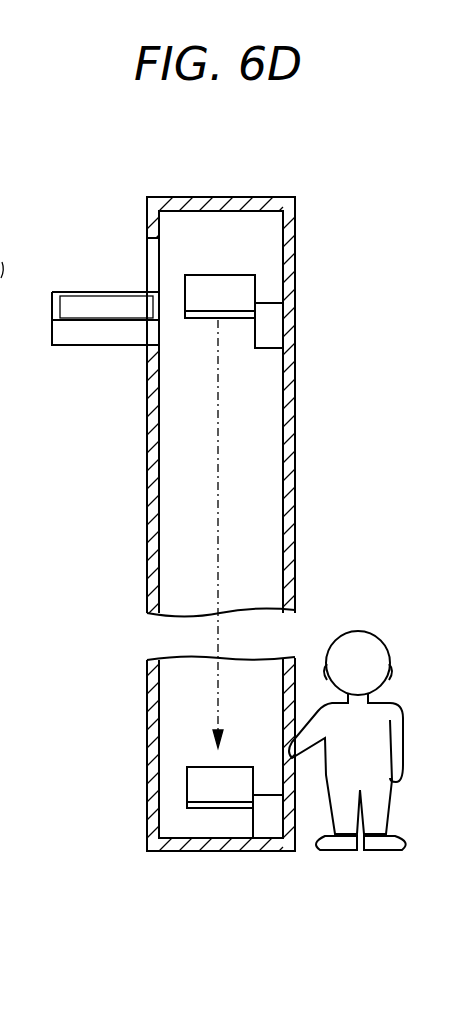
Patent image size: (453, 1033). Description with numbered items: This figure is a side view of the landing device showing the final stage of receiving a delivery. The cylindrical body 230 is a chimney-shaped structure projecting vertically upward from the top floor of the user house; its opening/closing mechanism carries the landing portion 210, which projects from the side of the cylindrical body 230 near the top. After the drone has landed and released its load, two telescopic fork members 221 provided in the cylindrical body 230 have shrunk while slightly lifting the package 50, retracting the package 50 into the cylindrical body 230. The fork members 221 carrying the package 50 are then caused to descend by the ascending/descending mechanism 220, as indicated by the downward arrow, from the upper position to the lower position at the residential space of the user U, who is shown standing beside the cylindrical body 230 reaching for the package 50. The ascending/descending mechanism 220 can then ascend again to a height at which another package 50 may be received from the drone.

The cylindrical body 230 is at (152, 470).
The landing portion 210 is at (96, 345).
The package 50 is at (238, 275).
The fork members 221 is at (207, 320).
The ascending/descending mechanism 220 is at (274, 332).
The user U is at (362, 637).